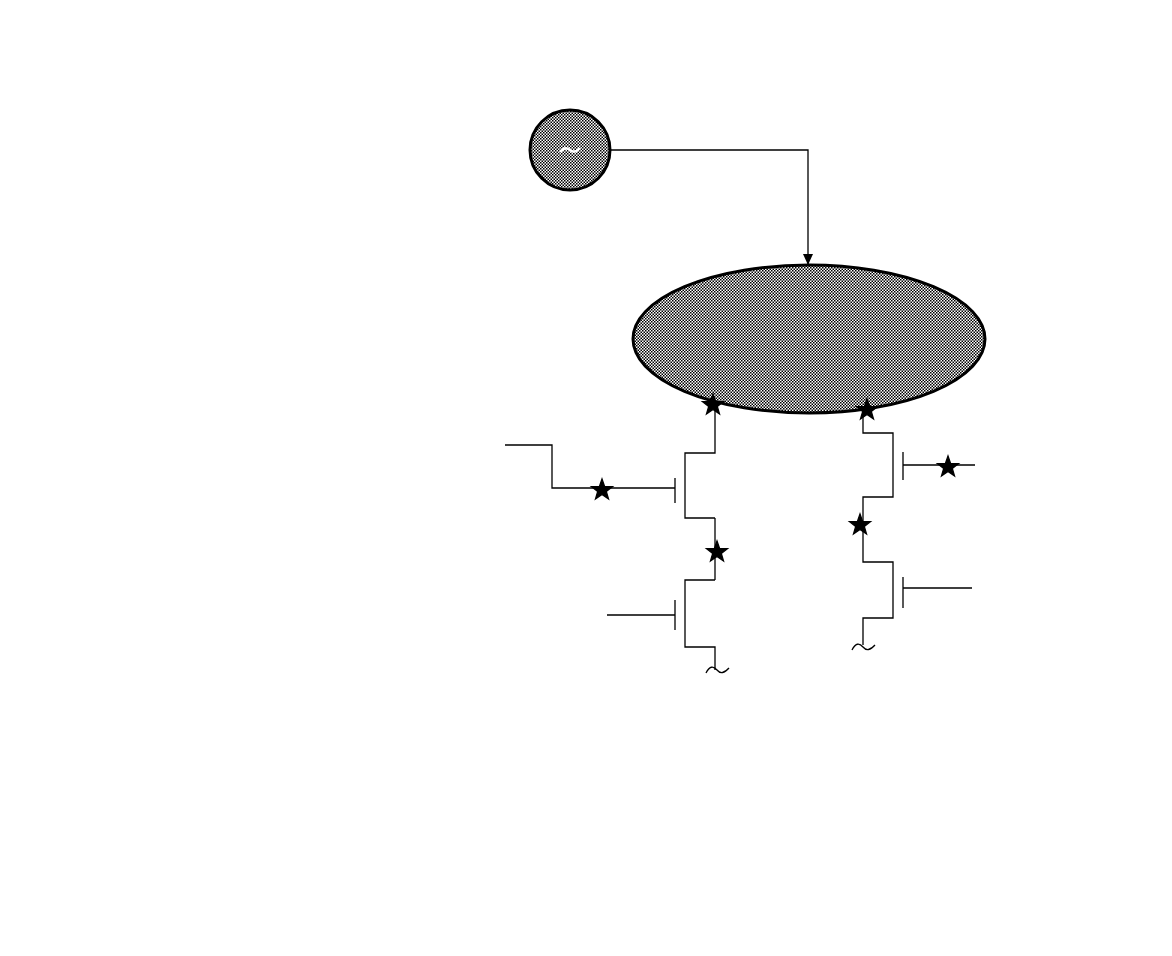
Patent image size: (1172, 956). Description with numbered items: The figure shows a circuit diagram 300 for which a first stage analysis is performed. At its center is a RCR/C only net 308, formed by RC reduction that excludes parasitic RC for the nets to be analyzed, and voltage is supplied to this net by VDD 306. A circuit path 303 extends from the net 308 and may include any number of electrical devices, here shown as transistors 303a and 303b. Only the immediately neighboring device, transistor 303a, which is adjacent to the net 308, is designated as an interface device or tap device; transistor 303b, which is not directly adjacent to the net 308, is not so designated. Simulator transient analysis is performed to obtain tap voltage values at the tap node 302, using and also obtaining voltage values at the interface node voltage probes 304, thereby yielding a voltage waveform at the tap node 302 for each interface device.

The circuit diagram 300 is at (305, 100).
The tap node 302 is at (701, 404).
The circuit path 303 is at (672, 565).
The transistor 303a is at (672, 458).
The transistor 303b is at (677, 633).
The interface node voltage probe 304 is at (700, 556).
The VDD 306 is at (660, 168).
The RCR/C only net 308 is at (809, 339).